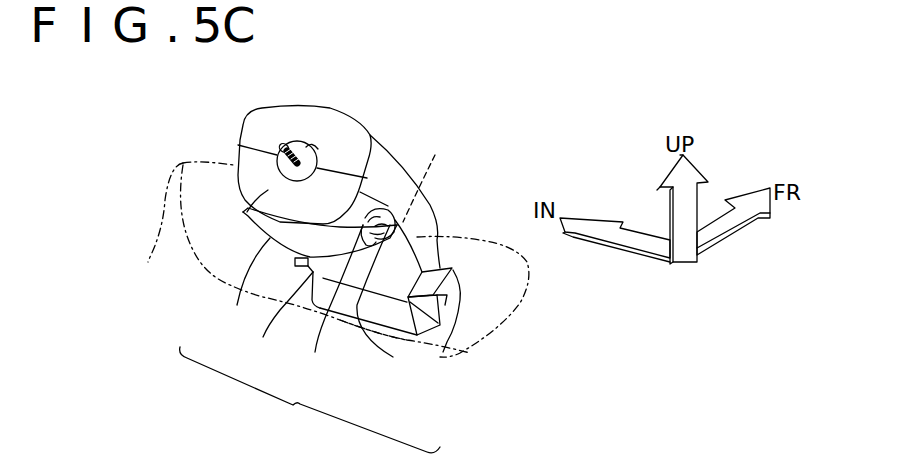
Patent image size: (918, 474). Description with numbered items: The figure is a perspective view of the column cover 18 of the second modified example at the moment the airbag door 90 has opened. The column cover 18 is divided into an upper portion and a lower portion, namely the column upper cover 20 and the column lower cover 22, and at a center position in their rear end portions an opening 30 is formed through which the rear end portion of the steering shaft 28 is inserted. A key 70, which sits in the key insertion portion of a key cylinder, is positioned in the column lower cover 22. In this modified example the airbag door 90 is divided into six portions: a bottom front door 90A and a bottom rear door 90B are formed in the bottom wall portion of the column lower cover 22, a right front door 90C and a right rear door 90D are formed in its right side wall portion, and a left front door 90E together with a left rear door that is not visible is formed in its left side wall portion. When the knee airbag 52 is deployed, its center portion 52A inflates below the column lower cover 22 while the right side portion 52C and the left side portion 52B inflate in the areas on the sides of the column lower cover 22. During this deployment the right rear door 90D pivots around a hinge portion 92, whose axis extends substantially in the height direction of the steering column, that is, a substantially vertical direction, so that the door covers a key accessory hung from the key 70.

The column cover 18 is at (412, 148).
The column upper cover 20 is at (373, 140).
The column lower cover 22 is at (243, 213).
The steering shaft 28 is at (283, 145).
The opening 30 is at (318, 148).
The knee airbag 52 is at (211, 277).
The center portion 52A is at (370, 338).
The left side portion 52B is at (163, 243).
The right side portion 52C is at (527, 297).
The key 70 is at (437, 153).
The airbag door 90 is at (310, 400).
The bottom front door 90A is at (357, 305).
The bottom rear door 90B is at (237, 305).
The right front door 90C is at (457, 325).
The right rear door 90D is at (315, 352).
The left front door 90E is at (263, 337).
The hinge portion 92 is at (420, 233).